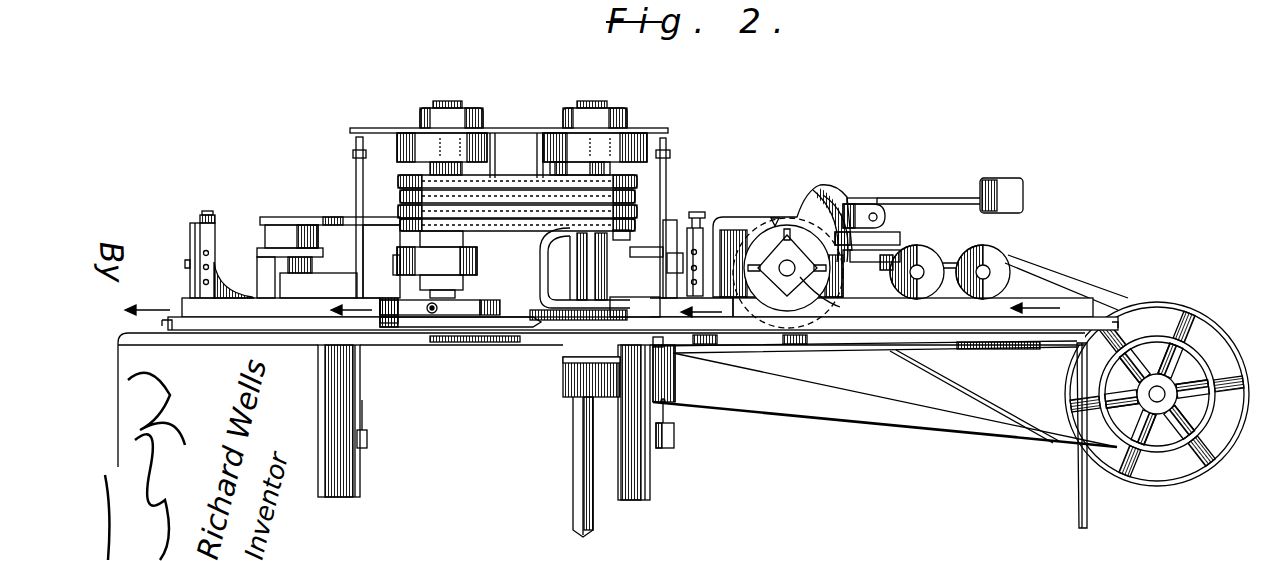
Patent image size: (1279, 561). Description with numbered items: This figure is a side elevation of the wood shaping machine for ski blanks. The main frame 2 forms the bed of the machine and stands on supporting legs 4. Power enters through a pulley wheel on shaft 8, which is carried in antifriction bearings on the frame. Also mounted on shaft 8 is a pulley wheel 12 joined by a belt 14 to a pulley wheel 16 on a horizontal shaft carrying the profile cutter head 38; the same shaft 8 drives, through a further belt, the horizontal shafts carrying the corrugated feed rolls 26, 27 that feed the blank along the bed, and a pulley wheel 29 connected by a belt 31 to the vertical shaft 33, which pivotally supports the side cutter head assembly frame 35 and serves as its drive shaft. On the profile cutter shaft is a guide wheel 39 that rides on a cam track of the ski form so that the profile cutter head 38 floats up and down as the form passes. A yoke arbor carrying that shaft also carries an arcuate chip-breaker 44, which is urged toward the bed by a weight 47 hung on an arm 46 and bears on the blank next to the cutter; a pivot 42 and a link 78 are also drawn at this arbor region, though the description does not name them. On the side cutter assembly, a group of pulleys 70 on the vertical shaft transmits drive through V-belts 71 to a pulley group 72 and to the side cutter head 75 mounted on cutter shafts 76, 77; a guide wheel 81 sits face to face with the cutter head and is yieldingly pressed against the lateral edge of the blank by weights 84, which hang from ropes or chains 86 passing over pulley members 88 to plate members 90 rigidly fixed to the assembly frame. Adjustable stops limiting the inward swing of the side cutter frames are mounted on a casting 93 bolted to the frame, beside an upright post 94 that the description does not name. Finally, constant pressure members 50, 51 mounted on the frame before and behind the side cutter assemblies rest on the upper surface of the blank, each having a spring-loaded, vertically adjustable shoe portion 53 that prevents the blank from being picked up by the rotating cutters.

The main frame 2 is at (216, 345).
The supporting legs 4 is at (316, 380).
The shaft 8 is at (1157, 398).
The pulley wheel 12 is at (1227, 433).
The belt 14 is at (1130, 296).
The pulley wheel 16 is at (832, 188).
The corrugated feed roll 26 is at (925, 252).
The corrugated feed roll 27 is at (1000, 258).
The pulley wheel 29 is at (1197, 377).
The belt 31 is at (783, 405).
The vertical shaft 33 is at (570, 482).
The side cutter head assembly frame 35 is at (522, 155).
The profile cutter head 38 is at (793, 290).
The guide wheel 39 is at (775, 218).
The arm 42 is at (885, 217).
The chip-breaker 44 is at (810, 267).
The arm 46 is at (935, 197).
The weight 47 is at (1023, 193).
The constant pressure member 50 is at (722, 213).
The constant pressure member 51 is at (245, 288).
The shoe portion 53 is at (745, 300).
The pulleys 70 is at (645, 205).
The V-belts 71 is at (555, 185).
The pulley group 72 is at (400, 197).
The side cutter head 75 is at (470, 317).
The cutter shaft 76 is at (615, 283).
The cutter shaft 77 is at (437, 264).
The link 78 is at (834, 299).
The guide wheel 81 is at (425, 317).
The weights 84 is at (676, 440).
The ropes or chains 86 is at (368, 422).
The pulley members 88 is at (356, 146).
The plate members 90 is at (420, 126).
The casting 93 is at (340, 224).
The upright post 94 is at (250, 252).